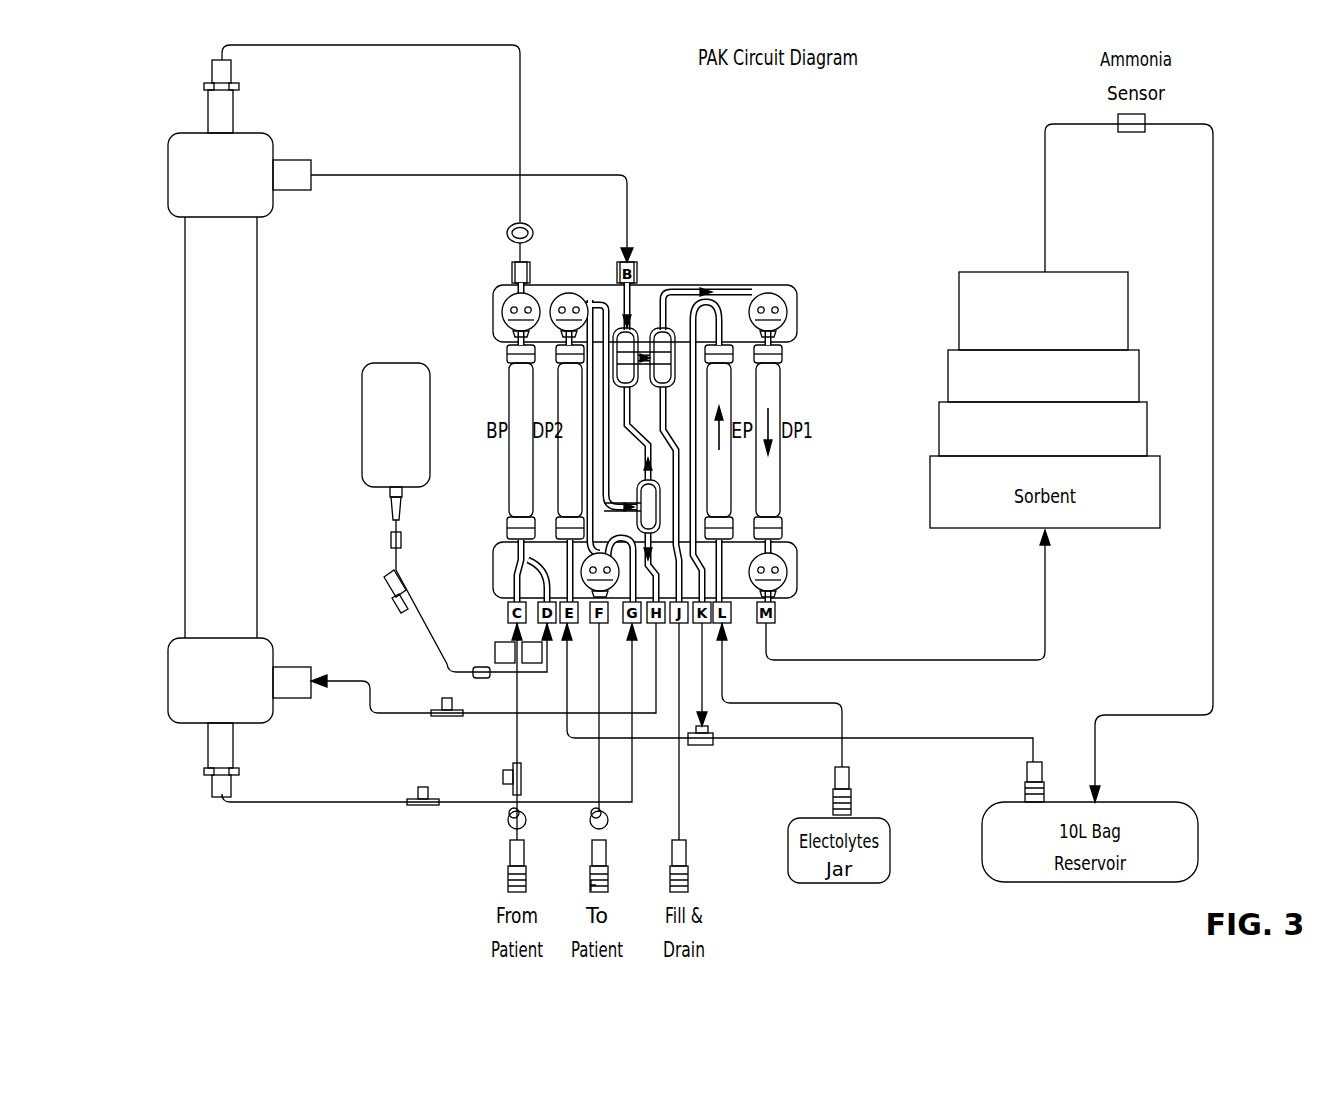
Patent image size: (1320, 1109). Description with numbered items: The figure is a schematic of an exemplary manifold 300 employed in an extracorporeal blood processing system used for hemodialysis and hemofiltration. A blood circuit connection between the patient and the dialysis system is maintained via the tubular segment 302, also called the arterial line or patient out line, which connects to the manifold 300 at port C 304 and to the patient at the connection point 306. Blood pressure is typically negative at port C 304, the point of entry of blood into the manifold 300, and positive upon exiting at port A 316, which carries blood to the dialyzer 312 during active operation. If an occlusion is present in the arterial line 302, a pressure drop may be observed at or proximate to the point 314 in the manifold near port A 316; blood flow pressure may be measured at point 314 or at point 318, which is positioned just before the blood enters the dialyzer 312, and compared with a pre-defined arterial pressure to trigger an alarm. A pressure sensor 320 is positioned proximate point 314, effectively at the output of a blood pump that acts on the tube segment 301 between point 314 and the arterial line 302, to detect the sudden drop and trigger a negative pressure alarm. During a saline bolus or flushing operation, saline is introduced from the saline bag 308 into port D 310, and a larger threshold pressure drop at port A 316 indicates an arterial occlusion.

The manifold 300 is at (758, 225).
The tube segment 301 is at (497, 478).
The tubular segment 302 is at (510, 783).
The port C 304 is at (507, 610).
The connection point 306 is at (506, 824).
The saline bag 308 is at (370, 383).
The port D 310 is at (537, 574).
The dialyzer 312 is at (185, 335).
The point 314 is at (505, 300).
The port A 316 is at (535, 258).
The point 318 is at (415, 48).
The pressure sensor 320 is at (507, 226).